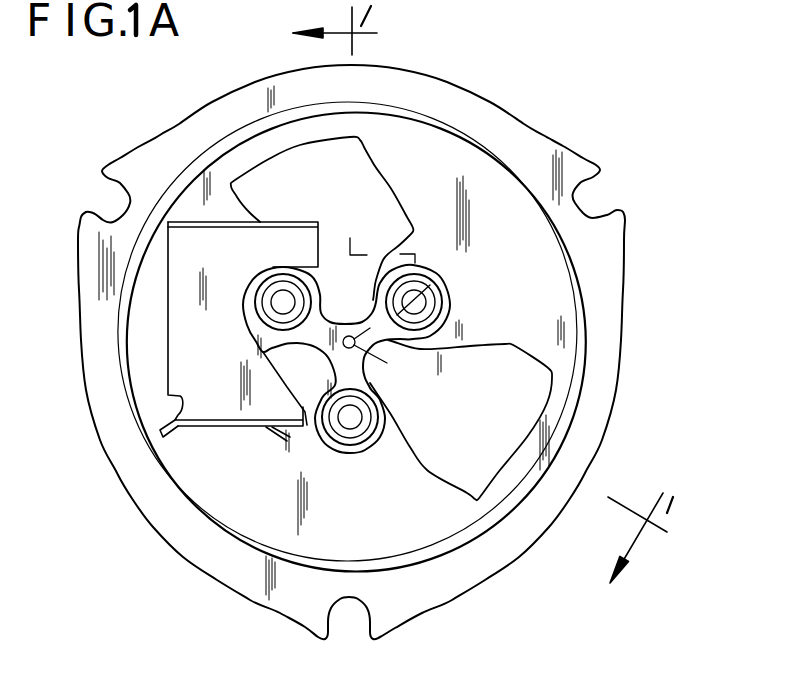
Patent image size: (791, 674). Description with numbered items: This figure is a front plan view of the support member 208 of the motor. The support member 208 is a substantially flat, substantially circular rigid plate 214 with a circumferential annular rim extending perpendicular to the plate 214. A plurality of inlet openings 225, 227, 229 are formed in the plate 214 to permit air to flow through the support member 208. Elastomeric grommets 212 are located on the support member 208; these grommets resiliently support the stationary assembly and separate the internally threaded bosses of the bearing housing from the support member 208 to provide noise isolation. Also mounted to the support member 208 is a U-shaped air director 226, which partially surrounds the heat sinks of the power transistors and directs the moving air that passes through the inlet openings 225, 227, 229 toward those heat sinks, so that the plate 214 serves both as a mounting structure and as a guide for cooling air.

The support member 208 is at (495, 88).
The elastomeric grommets 212 is at (272, 289).
The rigid plate 214 is at (398, 520).
The inlet opening 225 is at (546, 396).
The U-shaped air director 226 is at (197, 364).
The inlet opening 227 is at (383, 190).
The inlet opening 229 is at (263, 352).